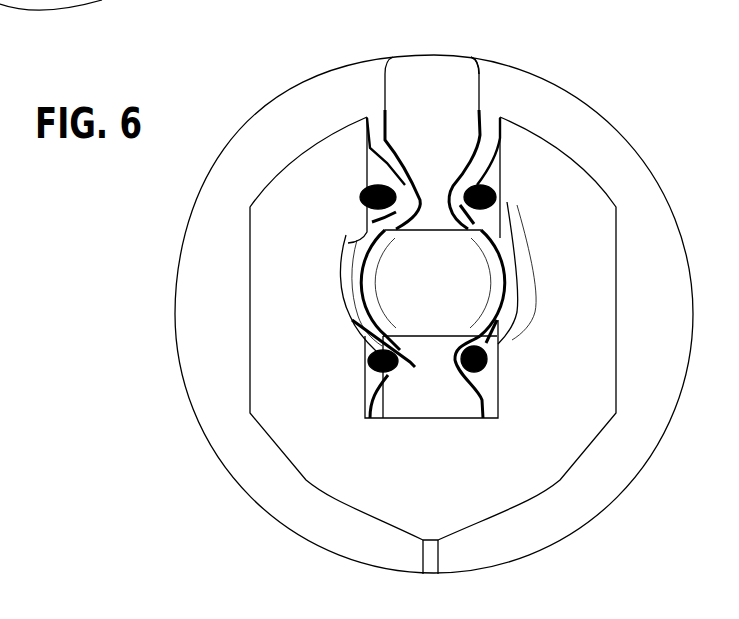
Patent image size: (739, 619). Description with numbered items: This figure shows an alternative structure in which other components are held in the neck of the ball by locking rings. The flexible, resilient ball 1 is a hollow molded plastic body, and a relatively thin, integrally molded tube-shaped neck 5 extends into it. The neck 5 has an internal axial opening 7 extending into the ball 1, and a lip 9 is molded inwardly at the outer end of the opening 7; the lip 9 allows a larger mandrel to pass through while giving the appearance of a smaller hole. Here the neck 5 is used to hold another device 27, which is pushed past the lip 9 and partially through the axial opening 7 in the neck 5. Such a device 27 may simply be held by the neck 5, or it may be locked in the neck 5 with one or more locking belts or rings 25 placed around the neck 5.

The ball 1 is at (287, 83).
The neck 5 is at (372, 146).
The internal opening 7 is at (387, 93).
The lip 9 is at (473, 57).
The locking belt 25 is at (490, 203).
The device 27 is at (501, 269).